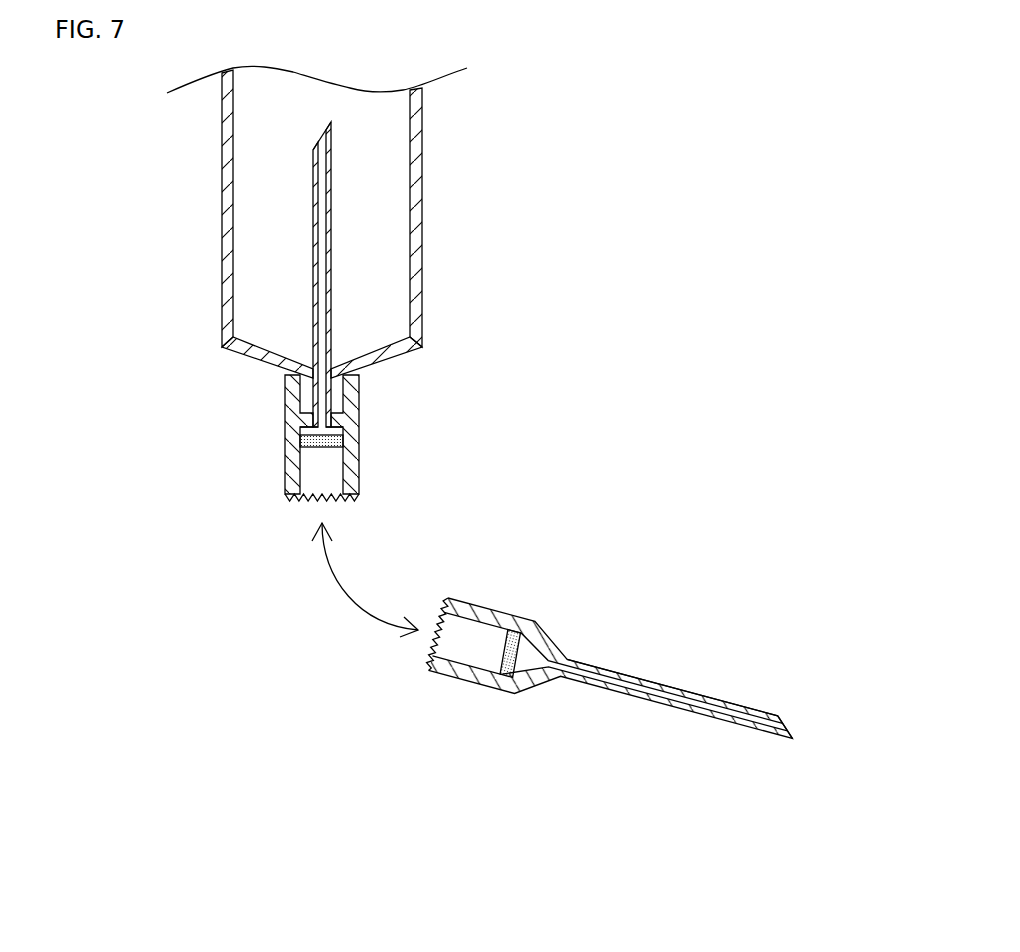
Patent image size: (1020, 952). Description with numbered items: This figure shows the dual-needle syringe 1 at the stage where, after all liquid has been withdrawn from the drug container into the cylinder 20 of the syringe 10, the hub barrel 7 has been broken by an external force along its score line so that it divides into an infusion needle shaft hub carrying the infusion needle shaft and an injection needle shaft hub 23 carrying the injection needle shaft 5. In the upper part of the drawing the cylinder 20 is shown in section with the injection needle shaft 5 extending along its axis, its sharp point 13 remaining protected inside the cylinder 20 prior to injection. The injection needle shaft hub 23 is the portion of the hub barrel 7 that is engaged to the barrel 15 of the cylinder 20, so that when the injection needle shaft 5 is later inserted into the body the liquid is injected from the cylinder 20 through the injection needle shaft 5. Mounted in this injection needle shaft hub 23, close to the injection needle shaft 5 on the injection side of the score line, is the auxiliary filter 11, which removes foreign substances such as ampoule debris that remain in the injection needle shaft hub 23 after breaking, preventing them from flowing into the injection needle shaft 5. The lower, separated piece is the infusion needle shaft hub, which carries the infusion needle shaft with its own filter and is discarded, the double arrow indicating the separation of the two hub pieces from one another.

The dual-needle syringe 1 is at (619, 637).
The injection needle shaft 5 is at (420, 264).
The hub barrel 7 is at (319, 420).
The syringe 10 is at (390, 284).
The auxiliary filter 11 is at (315, 447).
The sharp point 13 is at (331, 122).
The barrel 15 is at (360, 392).
The cylinder 20 is at (222, 195).
The injection needle shaft hub 23 is at (360, 448).